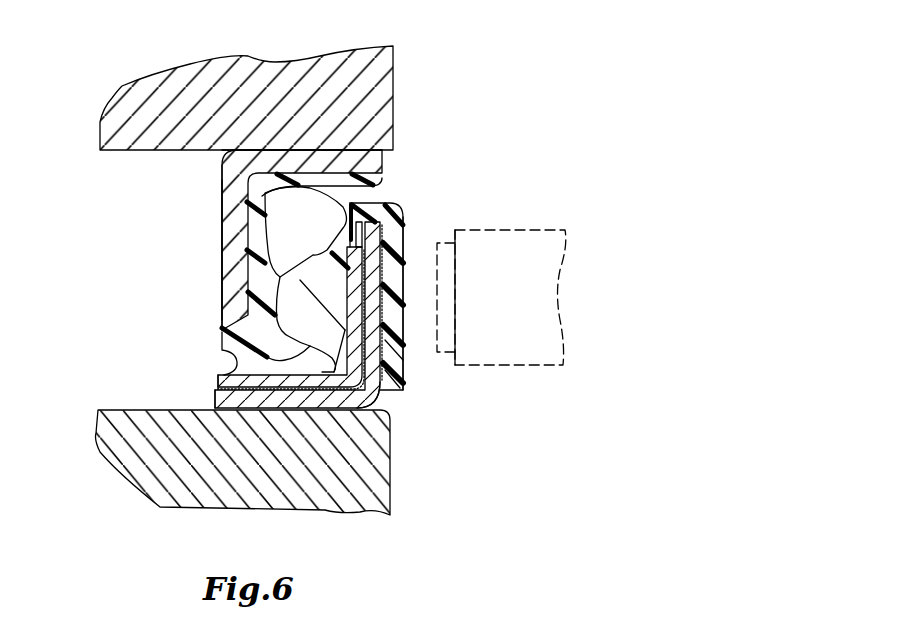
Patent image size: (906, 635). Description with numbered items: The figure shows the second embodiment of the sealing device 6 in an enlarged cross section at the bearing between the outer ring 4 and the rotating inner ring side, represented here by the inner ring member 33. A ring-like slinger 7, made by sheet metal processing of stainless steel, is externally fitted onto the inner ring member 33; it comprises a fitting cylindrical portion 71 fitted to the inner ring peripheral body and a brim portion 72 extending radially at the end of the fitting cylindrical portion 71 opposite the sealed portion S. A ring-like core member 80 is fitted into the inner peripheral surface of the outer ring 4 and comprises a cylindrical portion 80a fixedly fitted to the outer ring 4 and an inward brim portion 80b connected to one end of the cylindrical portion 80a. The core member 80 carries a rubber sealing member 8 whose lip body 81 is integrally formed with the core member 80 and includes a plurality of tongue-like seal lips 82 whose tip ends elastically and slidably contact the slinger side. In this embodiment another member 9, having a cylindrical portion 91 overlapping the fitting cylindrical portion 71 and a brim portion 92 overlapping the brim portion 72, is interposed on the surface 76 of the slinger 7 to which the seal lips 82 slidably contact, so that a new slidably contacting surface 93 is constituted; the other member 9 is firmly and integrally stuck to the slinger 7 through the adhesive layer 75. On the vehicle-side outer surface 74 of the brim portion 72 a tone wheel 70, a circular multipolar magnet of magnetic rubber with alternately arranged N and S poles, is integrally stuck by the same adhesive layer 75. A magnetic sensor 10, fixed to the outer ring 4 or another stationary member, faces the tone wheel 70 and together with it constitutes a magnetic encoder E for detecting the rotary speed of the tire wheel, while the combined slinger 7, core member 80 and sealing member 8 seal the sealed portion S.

The outer ring 4 is at (378, 97).
The sealing device 6 is at (180, 172).
The slinger 7 is at (322, 317).
The sealing member 8 is at (212, 307).
The other member 9 is at (205, 330).
The magnetic sensor 10 is at (483, 350).
The inner ring member 33 is at (377, 487).
The tone wheel 70 is at (397, 350).
The fitting cylindrical portion 71 is at (213, 398).
The brim portion 72 is at (387, 383).
The outer surface 74 is at (387, 277).
The adhesive layer 75 is at (377, 400).
The surface of the slinger 76 is at (395, 350).
The core member 80 is at (230, 222).
The cylindrical portion 80a is at (380, 140).
The inward brim portion 80b is at (230, 200).
The lip body 81 is at (250, 263).
The seal lip 82 is at (306, 275).
The cylindrical portion 91 is at (218, 381).
The brim portion 92 is at (352, 330).
The slidably contacting surface 93 is at (345, 300).
The sealed portion S is at (137, 333).
The magnetic encoder E is at (501, 332).